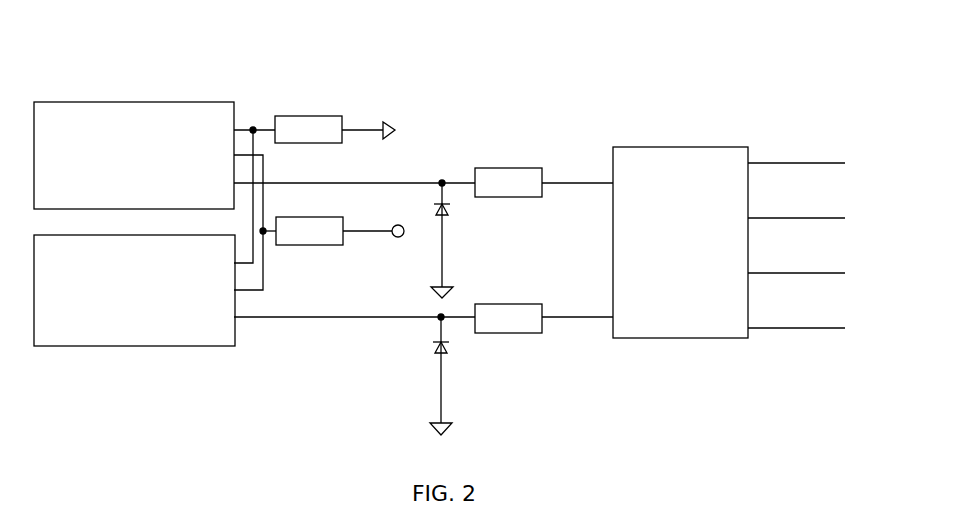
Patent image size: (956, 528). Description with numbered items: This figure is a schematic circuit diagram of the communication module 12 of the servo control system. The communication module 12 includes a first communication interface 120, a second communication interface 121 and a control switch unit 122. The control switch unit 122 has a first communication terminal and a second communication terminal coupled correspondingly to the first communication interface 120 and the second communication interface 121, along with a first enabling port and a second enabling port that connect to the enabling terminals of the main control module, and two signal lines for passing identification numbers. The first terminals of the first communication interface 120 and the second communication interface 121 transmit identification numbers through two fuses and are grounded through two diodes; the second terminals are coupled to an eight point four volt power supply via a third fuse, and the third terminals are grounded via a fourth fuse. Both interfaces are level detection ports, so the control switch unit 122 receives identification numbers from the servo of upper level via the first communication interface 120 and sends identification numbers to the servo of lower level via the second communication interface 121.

The communication module 12 is at (392, 50).
The first communication interface 120 is at (59, 102).
The second communication interface 121 is at (40, 235).
The control switch unit 122 is at (655, 147).